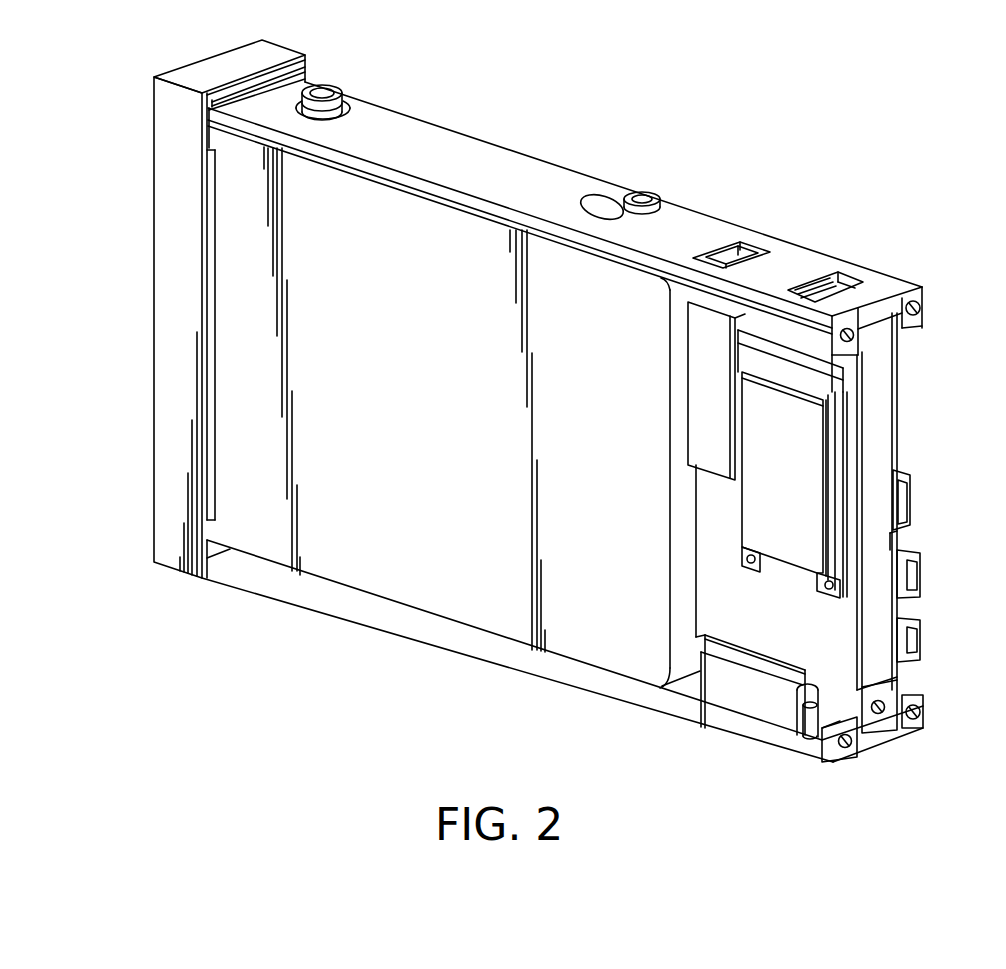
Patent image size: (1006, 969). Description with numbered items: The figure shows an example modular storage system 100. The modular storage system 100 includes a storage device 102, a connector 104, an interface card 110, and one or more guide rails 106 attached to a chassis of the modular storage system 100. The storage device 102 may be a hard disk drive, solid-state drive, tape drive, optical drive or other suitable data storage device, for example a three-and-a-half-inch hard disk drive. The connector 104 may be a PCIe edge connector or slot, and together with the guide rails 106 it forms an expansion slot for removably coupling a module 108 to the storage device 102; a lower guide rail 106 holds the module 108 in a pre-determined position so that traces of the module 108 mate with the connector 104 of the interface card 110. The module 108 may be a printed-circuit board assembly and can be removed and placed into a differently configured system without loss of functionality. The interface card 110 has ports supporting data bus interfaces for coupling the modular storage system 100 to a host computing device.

The modular storage system 100 is at (613, 148).
The storage device 102 is at (333, 570).
The connector 104 is at (703, 313).
The guide rails 106 is at (807, 335).
The module 108 is at (815, 492).
The interface card 110 is at (873, 420).